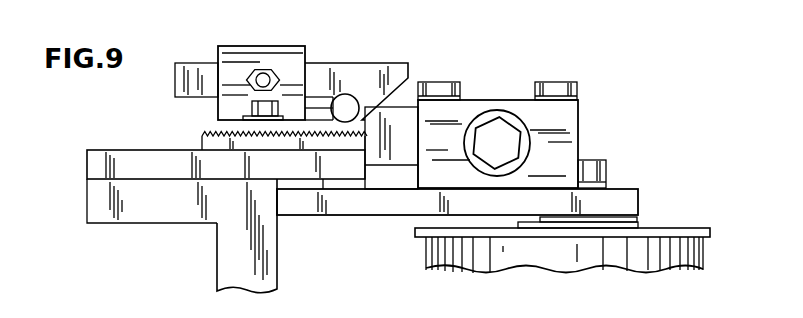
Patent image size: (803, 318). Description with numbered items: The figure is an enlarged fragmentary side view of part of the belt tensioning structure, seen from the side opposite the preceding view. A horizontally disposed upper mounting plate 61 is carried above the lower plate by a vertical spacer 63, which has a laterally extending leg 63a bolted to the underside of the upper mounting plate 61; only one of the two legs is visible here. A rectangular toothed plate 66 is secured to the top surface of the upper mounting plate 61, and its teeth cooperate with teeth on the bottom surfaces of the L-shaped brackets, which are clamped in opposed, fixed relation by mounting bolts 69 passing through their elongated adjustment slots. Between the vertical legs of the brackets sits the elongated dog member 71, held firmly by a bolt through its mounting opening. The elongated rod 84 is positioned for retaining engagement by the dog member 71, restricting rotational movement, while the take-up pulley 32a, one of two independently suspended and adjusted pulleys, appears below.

The mounting bolts 69 is at (247, 101).
The dog member 71 is at (323, 63).
The elongated rod 84 is at (348, 104).
The toothed plate 66 is at (202, 135).
The upper mounting plate 61 is at (90, 164).
The leg 63a is at (87, 202).
The spacer 63 is at (214, 263).
The take-up pulley 32a is at (698, 229).